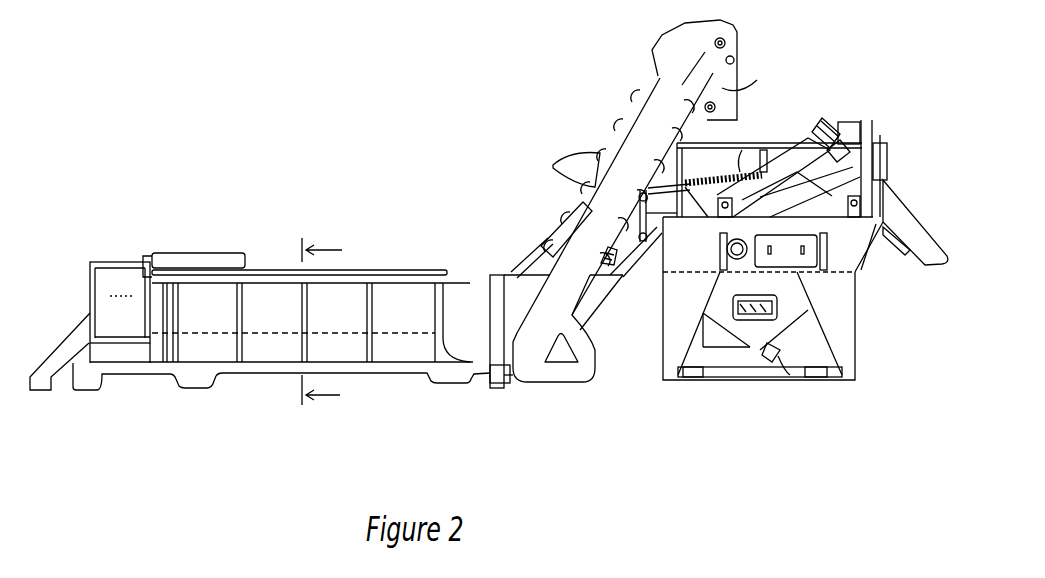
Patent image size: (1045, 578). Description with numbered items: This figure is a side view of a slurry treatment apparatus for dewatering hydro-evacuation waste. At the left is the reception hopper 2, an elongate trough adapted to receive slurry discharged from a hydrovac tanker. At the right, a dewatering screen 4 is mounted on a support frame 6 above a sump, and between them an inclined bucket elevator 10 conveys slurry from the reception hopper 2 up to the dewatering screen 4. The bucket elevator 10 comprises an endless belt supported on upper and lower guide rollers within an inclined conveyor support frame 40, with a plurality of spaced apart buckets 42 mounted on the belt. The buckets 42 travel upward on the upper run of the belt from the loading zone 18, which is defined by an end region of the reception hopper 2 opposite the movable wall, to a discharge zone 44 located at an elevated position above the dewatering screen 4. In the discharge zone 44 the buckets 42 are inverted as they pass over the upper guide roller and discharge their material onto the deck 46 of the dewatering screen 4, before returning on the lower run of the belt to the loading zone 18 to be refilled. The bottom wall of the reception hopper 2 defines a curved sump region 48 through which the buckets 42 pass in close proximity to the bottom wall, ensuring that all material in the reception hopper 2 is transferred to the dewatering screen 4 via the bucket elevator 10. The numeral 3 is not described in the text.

The reception hopper 2 is at (240, 421).
The nozzle assembly 3 is at (758, 335).
The dewatering screen 4 is at (843, 103).
The support frame 6 is at (850, 348).
The inclined bucket elevator 10 is at (615, 192).
The loading zone 18 is at (558, 348).
The inclined conveyor support frame 40 is at (647, 170).
The buckets 42 is at (552, 168).
The discharge zone 44 is at (740, 92).
The deck 46 is at (732, 172).
The curved sump region 48 is at (503, 372).